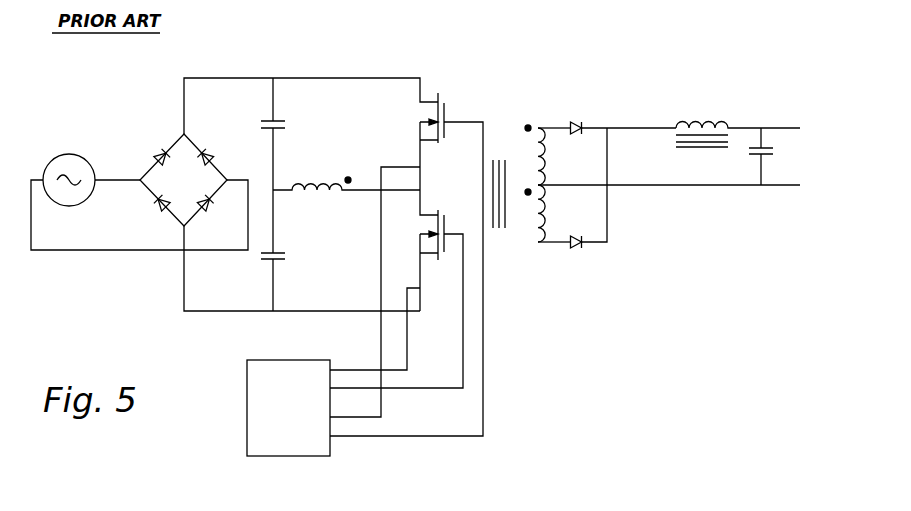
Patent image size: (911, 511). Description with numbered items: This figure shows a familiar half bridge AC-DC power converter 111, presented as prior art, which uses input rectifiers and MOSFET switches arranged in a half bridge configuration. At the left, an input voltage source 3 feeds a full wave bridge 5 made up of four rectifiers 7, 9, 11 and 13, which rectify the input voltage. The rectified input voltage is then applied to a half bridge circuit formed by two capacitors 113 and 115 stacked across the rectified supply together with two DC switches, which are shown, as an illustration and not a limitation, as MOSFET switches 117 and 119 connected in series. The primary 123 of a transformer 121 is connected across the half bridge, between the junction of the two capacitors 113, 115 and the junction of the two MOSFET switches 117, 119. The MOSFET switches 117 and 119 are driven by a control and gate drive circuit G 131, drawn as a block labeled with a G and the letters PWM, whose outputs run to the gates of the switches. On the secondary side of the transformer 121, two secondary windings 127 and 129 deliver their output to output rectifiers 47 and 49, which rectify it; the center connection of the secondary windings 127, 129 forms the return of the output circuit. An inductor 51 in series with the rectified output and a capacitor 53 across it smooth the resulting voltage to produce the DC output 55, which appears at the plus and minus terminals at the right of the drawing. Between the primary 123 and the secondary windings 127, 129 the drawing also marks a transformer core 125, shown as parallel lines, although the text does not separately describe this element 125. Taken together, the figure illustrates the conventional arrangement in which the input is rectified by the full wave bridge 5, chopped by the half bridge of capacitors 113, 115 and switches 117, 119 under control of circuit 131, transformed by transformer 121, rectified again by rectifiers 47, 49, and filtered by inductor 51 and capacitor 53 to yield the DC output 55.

The input voltage source 3 is at (80, 147).
The full wave bridge 5 is at (161, 135).
The rectifier 7 is at (208, 147).
The rectifier 9 is at (163, 215).
The rectifier 11 is at (217, 203).
The rectifier 13 is at (148, 163).
The output rectifier 47 is at (575, 253).
The output rectifier 49 is at (571, 121).
The inductor 51 is at (683, 120).
The capacitor 53 is at (748, 160).
The DC output 55 is at (833, 140).
The half bridge AC-DC power converter 111 is at (163, 78).
The capacitor 113 is at (288, 137).
The capacitor 115 is at (292, 262).
The MOSFET switch 117 is at (408, 118).
The MOSFET switch 119 is at (413, 236).
The transformer 121 is at (489, 95).
The primary 123 is at (313, 178).
The transformer core 125 is at (497, 150).
The secondary winding 127 is at (532, 150).
The secondary winding 129 is at (530, 218).
The control and gate drive circuit G 131 is at (233, 409).